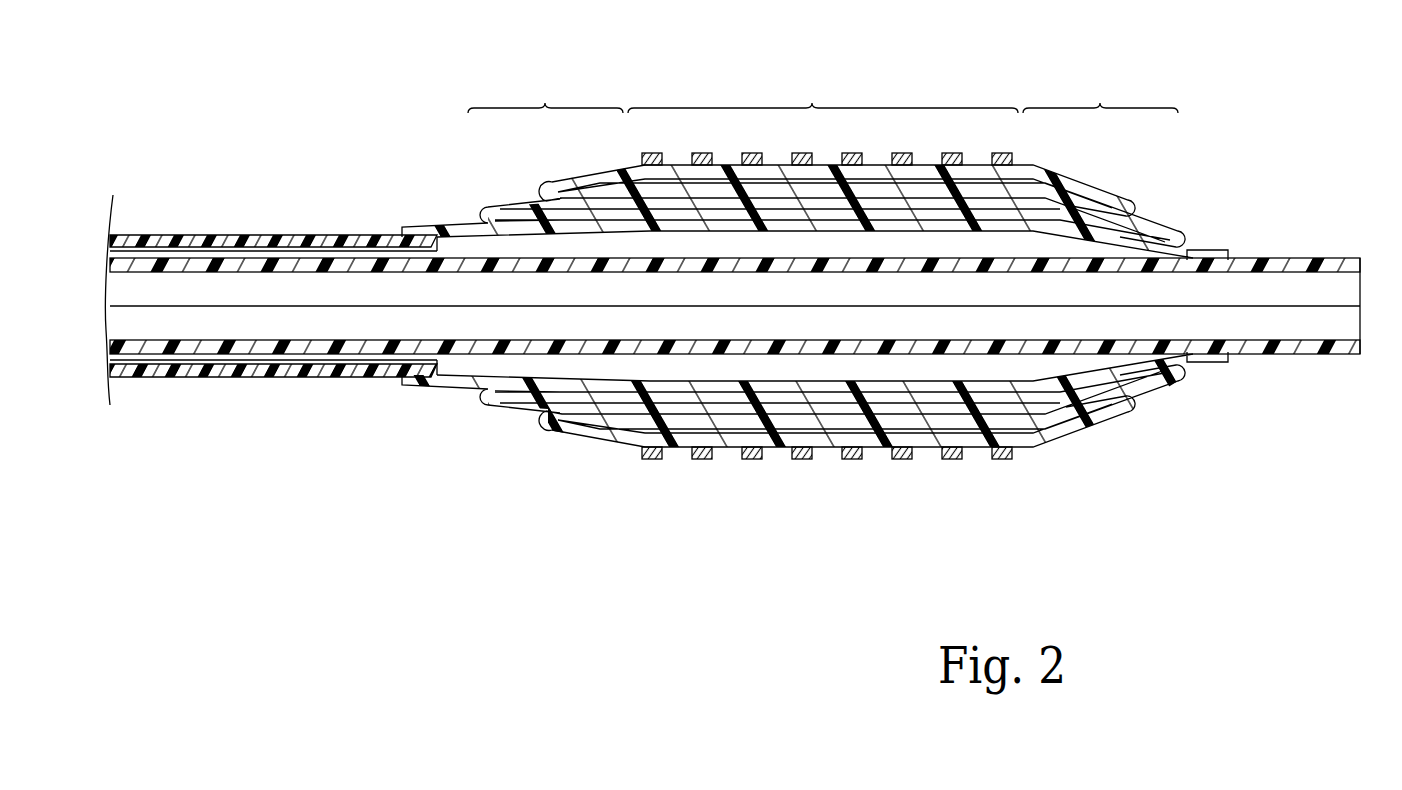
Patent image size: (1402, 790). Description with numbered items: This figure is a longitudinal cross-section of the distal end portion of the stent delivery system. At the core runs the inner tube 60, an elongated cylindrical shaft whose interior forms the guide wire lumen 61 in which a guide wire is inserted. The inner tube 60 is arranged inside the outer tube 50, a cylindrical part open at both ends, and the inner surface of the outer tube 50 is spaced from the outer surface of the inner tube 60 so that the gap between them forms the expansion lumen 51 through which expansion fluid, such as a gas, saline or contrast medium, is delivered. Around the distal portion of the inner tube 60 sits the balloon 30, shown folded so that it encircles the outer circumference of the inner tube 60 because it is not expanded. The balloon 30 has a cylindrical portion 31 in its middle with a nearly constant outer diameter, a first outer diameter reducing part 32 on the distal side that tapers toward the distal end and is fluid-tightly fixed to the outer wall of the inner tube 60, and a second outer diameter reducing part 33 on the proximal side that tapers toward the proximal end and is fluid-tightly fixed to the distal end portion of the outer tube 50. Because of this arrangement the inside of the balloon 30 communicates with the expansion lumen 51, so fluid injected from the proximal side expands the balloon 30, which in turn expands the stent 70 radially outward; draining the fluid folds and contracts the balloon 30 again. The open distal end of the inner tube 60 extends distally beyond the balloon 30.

The balloon 30 is at (838, 461).
The cylindrical portion 31 is at (823, 93).
The first outer diameter reducing part 32 is at (1100, 91).
The second outer diameter reducing part 33 is at (545, 93).
The outer tube 50 is at (357, 242).
The expansion lumen 51 is at (302, 250).
The inner tube 60 is at (235, 266).
The guide wire lumen 61 is at (177, 270).
The stent 70 is at (705, 461).